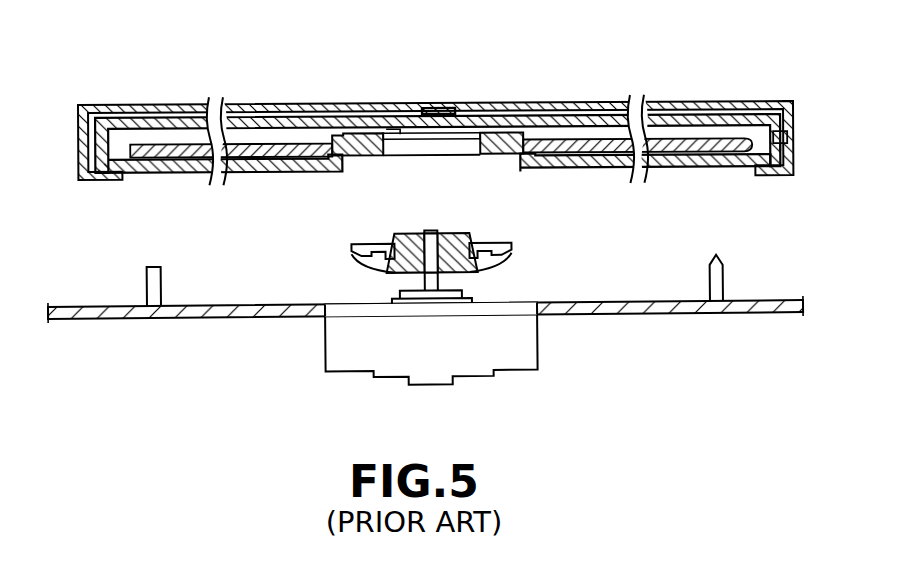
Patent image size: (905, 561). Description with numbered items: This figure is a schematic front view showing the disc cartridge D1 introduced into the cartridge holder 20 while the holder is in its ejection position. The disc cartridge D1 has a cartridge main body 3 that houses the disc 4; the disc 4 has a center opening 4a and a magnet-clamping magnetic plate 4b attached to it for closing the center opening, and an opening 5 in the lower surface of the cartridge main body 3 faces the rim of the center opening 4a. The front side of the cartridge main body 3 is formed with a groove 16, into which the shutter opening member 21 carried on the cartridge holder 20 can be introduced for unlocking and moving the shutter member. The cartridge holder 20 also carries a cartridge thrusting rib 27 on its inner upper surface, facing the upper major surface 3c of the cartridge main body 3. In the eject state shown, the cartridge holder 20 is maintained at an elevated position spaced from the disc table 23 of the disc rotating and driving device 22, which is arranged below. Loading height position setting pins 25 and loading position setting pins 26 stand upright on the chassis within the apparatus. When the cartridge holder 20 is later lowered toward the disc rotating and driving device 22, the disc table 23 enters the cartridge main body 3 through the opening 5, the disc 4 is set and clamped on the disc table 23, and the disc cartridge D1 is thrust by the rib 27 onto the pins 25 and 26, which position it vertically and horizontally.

The cartridge holder 20 is at (73, 106).
The disc cartridge D1 is at (130, 98).
The cartridge main body 3 is at (178, 115).
The upper major surface 3c is at (588, 118).
The disc 4 is at (253, 143).
The center opening 4a is at (394, 119).
The magnet-clamping magnetic plate 4b is at (408, 119).
The cartridge thrusting rib 27 is at (443, 110).
The groove 16 is at (790, 103).
The shutter opening member 21 is at (789, 141).
The opening 5 is at (349, 162).
The disc rotating and driving device 22 is at (530, 360).
The disc table 23 is at (509, 264).
The loading height position setting pins 25 is at (156, 294).
The loading position setting pins 26 is at (707, 285).